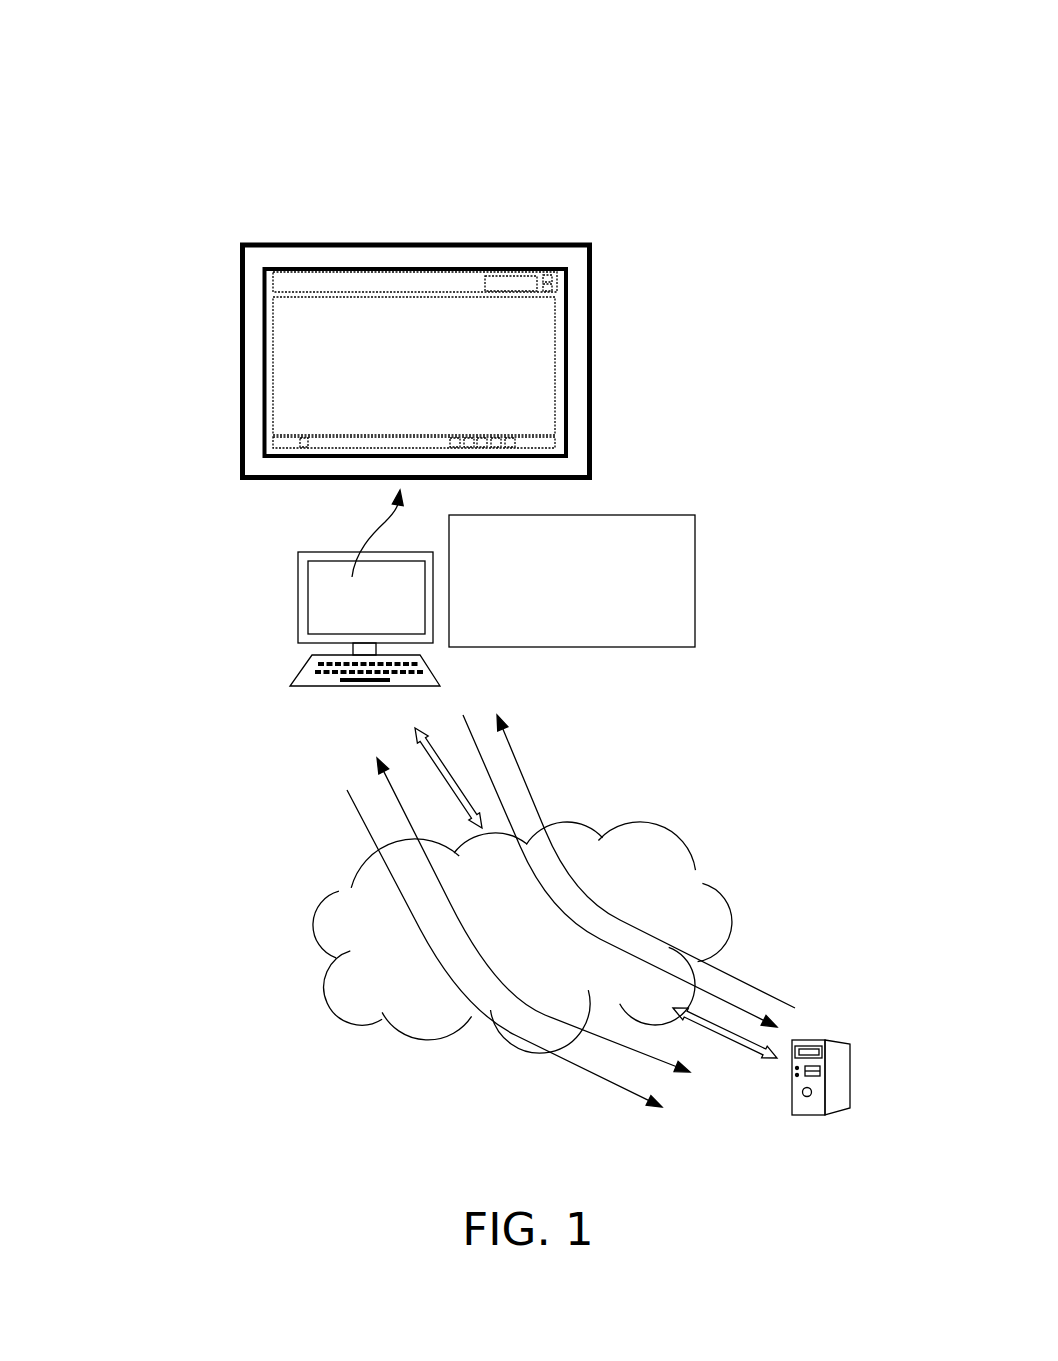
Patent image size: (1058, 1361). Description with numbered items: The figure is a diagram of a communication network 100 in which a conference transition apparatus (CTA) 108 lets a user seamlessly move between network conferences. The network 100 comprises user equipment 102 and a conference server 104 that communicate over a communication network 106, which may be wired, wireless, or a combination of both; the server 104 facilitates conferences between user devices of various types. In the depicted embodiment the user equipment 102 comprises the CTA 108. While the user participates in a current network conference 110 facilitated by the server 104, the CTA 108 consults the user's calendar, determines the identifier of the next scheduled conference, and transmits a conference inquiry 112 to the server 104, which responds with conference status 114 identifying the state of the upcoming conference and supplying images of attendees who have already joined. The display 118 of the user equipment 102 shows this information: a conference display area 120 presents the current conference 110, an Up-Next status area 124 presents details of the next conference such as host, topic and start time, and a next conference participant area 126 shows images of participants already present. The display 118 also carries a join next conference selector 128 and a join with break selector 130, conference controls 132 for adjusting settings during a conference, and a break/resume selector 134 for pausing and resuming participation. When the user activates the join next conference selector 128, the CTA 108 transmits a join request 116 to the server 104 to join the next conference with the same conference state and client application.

The communication network 100 is at (854, 41).
The user equipment 102 is at (298, 608).
The conference server 104 is at (830, 1040).
The communication network 106 is at (335, 1005).
The conference transition apparatus 108 is at (695, 565).
The current network conference 110 is at (392, 790).
The conference inquiry 112 is at (725, 1005).
The conference status 114 is at (524, 778).
The join request 116 is at (362, 822).
The display 118 is at (240, 272).
The conference display area 120 is at (372, 365).
The Up-Next status area 124 is at (500, 283).
The next conference participant area 126 is at (358, 283).
The join next conference selector 128 is at (555, 280).
The join with break selector 130 is at (556, 288).
The conference controls 132 is at (517, 443).
The break/resume selector 134 is at (305, 441).